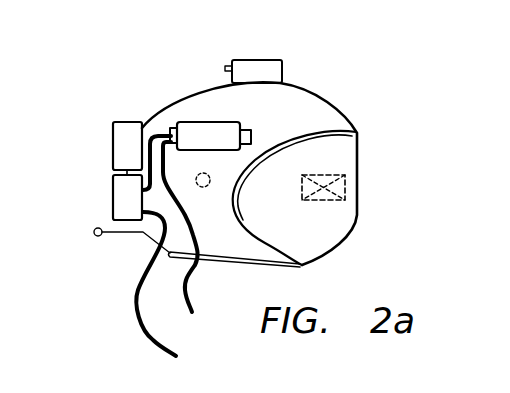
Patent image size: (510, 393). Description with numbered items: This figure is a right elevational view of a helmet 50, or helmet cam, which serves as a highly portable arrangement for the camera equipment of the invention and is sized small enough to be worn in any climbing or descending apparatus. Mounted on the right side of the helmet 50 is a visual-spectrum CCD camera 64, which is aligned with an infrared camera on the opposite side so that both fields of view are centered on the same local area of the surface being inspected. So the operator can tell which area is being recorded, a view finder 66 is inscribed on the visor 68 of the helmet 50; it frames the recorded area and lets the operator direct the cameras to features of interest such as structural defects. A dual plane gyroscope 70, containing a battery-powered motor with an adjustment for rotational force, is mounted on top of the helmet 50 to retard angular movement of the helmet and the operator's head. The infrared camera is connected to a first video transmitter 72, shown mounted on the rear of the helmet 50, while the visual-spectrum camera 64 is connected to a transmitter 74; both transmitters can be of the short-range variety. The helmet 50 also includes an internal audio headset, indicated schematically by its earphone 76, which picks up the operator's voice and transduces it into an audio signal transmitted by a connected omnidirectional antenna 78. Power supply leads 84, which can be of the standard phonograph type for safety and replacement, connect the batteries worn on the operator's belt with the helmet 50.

The helmet 50 is at (334, 84).
The visual-spectrum CCD camera 64 is at (190, 122).
The view finder 66 is at (346, 192).
The visor 68 is at (358, 155).
The dual plane gyroscope 70 is at (250, 60).
The first video transmitter 72 is at (113, 196).
The transmitter 74 is at (113, 150).
The earphone 76 is at (204, 188).
The omnidirectional antenna 78 is at (96, 237).
The power supply leads 84 is at (136, 305).